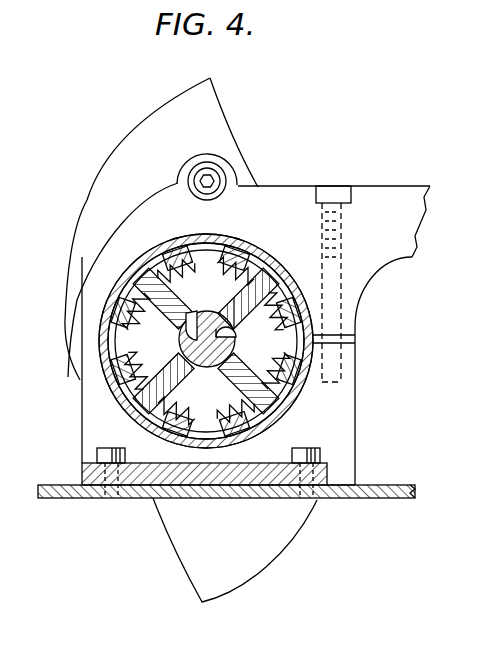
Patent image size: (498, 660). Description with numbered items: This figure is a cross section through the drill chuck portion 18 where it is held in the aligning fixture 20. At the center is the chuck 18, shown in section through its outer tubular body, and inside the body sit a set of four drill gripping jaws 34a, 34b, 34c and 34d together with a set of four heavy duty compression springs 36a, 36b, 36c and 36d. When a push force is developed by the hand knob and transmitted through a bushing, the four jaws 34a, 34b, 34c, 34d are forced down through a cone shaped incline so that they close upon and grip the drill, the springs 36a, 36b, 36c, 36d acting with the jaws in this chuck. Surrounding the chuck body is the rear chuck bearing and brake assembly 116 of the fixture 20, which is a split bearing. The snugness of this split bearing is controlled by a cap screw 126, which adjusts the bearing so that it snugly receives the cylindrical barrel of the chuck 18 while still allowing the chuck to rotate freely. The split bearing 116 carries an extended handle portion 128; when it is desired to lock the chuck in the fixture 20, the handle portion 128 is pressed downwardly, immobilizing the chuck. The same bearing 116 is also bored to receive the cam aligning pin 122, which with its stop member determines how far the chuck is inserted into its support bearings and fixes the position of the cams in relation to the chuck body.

The drill chuck portion 18 is at (100, 318).
The aligning fixture 20 is at (399, 171).
The drill gripping jaw 34a is at (110, 340).
The drill gripping jaw 34b is at (236, 246).
The drill gripping jaw 34c is at (297, 350).
The drill gripping jaw 34d is at (195, 430).
The heavy duty compression spring 36a is at (152, 278).
The heavy duty compression spring 36b is at (266, 262).
The heavy duty compression spring 36c is at (275, 395).
The heavy duty compression spring 36d is at (160, 398).
The rear chuck bearing and brake assembly 116 is at (436, 226).
The cam aligning pin 122 is at (216, 168).
The cap screw 126 is at (327, 198).
The extended handle portion 128 is at (423, 196).